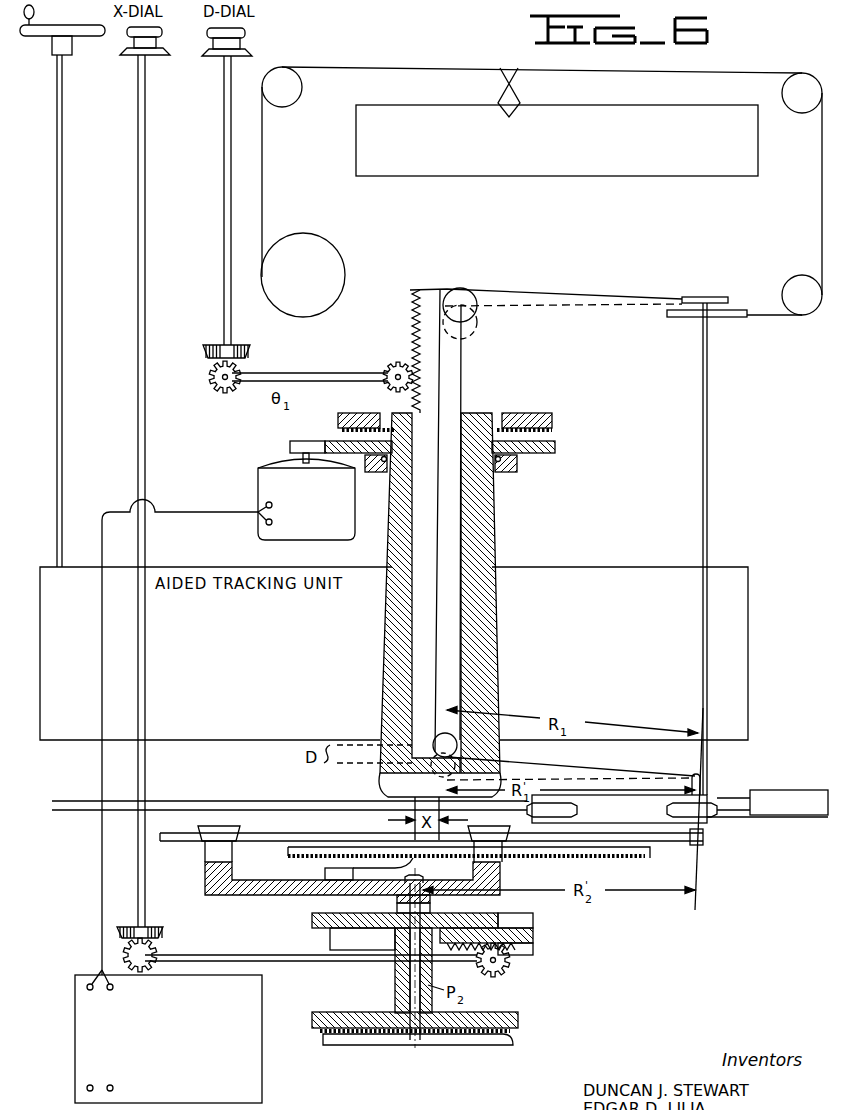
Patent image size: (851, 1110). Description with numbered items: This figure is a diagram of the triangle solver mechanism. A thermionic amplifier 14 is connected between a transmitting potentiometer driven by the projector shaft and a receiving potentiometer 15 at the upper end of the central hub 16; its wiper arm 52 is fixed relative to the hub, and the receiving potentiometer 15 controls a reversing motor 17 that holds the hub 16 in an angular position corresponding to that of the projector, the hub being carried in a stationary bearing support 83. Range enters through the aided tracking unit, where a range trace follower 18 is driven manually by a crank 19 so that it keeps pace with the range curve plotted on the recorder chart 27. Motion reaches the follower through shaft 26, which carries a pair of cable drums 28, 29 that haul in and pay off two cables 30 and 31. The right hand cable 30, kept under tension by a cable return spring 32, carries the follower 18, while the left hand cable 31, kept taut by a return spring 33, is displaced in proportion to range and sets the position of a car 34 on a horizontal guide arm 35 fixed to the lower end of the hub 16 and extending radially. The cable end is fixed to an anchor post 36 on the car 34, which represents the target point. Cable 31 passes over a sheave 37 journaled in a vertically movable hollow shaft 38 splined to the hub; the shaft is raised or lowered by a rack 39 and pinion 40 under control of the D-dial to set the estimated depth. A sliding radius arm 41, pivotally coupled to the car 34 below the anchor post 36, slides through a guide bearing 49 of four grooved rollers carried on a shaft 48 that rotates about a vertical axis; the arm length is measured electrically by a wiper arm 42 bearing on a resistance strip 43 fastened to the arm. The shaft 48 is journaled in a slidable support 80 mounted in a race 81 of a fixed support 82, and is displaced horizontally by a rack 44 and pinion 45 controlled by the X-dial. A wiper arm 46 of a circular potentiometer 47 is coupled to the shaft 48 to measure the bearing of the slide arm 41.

The thermionic amplifier 14 is at (258, 1072).
The receiving potentiometer 15 is at (552, 432).
The central hub 16 is at (493, 535).
The reversing motor 17 is at (260, 497).
The range trace follower 18 is at (506, 115).
The crank 19 is at (35, 14).
The shaft 26 is at (708, 478).
The chart 27 is at (406, 176).
The cable drum 28 is at (730, 318).
The cable drum 29 is at (712, 298).
The right hand cable 30 is at (821, 212).
The left hand cable 31 is at (560, 293).
The cable return spring 32 is at (309, 238).
The return spring 33 is at (777, 790).
The car 34 is at (640, 817).
The horizontal guide arm 35 is at (192, 803).
The anchor post 36 is at (702, 779).
The sheave 37 is at (432, 737).
The hollow shaft 38 is at (463, 392).
The rack 39 is at (412, 328).
The pinion 40 is at (386, 364).
The sliding radius arm 41 is at (672, 841).
The wiper arm 42 is at (345, 897).
The resistance strip 43 is at (300, 867).
The rack 44 is at (533, 945).
The pinion 45 is at (512, 966).
The wiper arm 46 is at (452, 1046).
The circular potentiometer 47 is at (368, 1034).
The shaft 48 is at (408, 967).
The guide bearing 49 is at (205, 858).
The wiper arm 52 is at (338, 433).
The slidable support 80 is at (330, 922).
The race 81 is at (533, 920).
The fixed support 82 is at (533, 952).
The stationary bearing support 83 is at (518, 472).